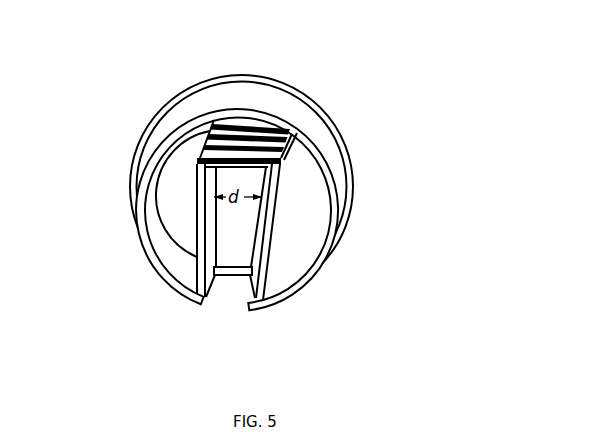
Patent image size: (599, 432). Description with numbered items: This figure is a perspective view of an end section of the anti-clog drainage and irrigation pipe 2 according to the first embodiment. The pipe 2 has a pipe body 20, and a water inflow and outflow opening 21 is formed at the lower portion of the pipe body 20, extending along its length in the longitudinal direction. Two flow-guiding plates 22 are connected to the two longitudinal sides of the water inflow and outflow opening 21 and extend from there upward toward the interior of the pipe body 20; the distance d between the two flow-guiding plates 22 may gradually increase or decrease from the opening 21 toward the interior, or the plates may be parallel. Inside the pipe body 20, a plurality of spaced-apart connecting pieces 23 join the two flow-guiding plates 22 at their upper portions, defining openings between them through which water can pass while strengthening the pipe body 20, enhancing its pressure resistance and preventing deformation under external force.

The anti-clog drainage and irrigation pipe 2 is at (120, 92).
The pipe body 20 is at (320, 138).
The water inflow and outflow opening 21 is at (233, 297).
The flow-guiding plates 22 is at (210, 215).
The connecting pieces 23 is at (232, 160).